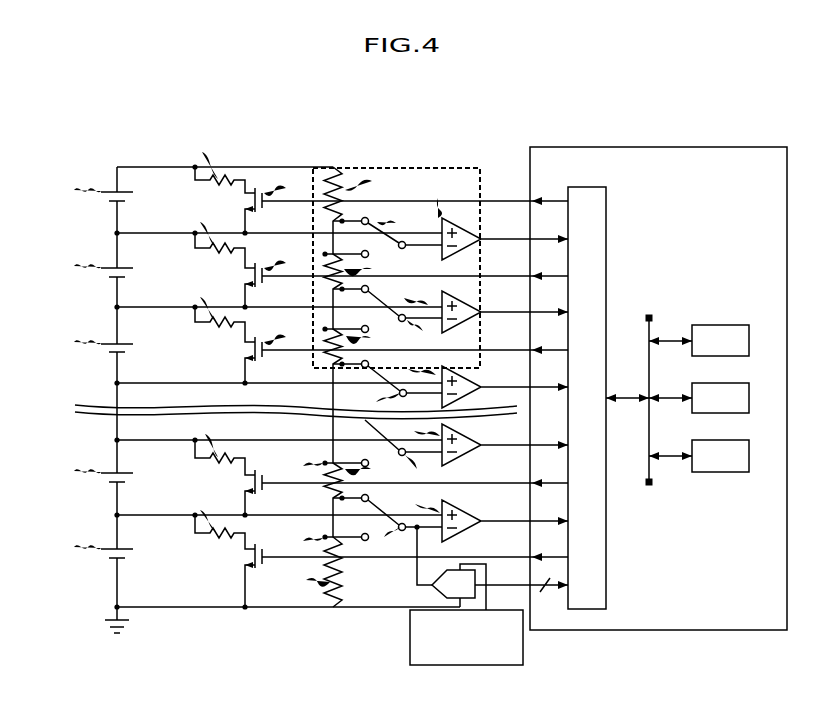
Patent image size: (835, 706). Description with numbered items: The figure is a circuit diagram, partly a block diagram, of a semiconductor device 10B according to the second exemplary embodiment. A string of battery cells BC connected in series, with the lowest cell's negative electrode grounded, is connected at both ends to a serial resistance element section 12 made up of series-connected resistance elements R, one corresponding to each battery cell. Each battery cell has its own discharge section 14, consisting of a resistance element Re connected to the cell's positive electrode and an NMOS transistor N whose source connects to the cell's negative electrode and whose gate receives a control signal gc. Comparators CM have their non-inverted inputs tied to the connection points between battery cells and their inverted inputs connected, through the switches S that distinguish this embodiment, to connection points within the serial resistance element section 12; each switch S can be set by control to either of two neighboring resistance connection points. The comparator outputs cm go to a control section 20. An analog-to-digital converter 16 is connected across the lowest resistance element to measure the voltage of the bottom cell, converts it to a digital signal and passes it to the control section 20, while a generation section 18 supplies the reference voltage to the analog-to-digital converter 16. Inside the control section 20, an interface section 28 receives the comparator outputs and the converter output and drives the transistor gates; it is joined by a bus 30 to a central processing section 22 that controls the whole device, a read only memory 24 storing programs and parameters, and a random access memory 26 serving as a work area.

The semiconductor device 10B is at (664, 126).
The serial resistance element section 12 is at (360, 156).
The discharge section 14 is at (256, 530).
The analog-to-digital converter 16 is at (431, 592).
The generation section 18 is at (409, 637).
The control section 20 is at (717, 145).
The central processing section 22 is at (721, 323).
The read only memory 24 is at (723, 381).
The random access memory 26 is at (723, 437).
The interface section 28 is at (607, 253).
The bus 30 is at (652, 332).